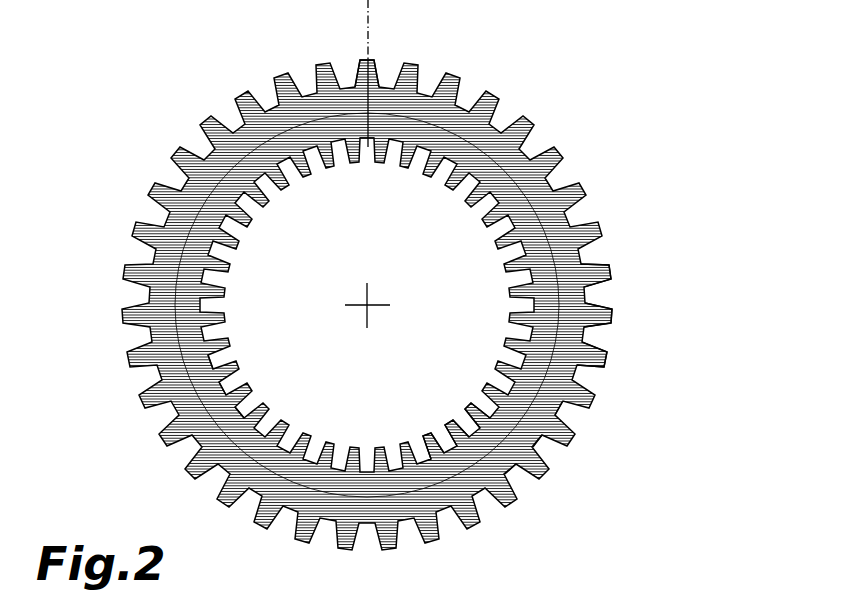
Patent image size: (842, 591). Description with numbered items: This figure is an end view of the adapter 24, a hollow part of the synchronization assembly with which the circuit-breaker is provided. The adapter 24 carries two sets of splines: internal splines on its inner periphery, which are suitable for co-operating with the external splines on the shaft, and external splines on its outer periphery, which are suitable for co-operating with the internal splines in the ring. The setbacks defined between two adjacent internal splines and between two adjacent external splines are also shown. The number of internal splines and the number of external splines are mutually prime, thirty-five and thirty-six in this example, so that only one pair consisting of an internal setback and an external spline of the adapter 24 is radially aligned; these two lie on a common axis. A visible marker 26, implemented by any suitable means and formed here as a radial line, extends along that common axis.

The adapter 24 is at (433, 297).
The visible marker 26 is at (350, 108).